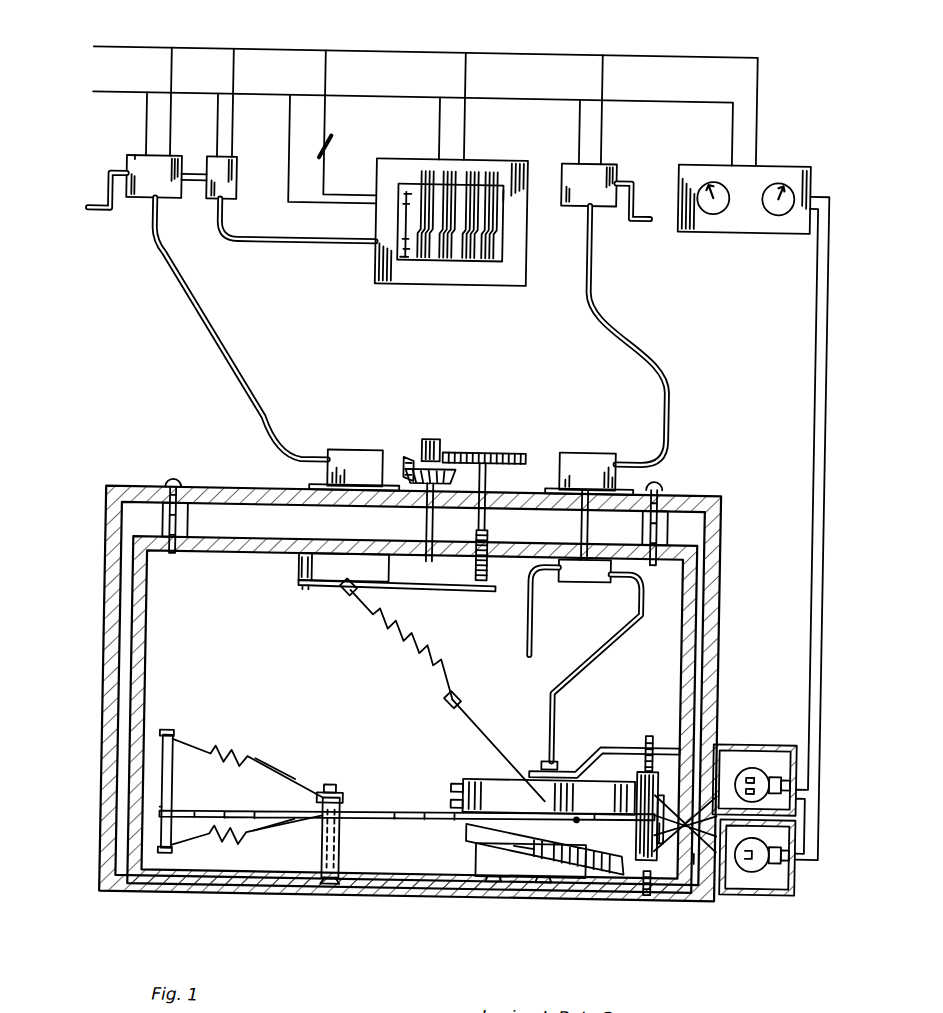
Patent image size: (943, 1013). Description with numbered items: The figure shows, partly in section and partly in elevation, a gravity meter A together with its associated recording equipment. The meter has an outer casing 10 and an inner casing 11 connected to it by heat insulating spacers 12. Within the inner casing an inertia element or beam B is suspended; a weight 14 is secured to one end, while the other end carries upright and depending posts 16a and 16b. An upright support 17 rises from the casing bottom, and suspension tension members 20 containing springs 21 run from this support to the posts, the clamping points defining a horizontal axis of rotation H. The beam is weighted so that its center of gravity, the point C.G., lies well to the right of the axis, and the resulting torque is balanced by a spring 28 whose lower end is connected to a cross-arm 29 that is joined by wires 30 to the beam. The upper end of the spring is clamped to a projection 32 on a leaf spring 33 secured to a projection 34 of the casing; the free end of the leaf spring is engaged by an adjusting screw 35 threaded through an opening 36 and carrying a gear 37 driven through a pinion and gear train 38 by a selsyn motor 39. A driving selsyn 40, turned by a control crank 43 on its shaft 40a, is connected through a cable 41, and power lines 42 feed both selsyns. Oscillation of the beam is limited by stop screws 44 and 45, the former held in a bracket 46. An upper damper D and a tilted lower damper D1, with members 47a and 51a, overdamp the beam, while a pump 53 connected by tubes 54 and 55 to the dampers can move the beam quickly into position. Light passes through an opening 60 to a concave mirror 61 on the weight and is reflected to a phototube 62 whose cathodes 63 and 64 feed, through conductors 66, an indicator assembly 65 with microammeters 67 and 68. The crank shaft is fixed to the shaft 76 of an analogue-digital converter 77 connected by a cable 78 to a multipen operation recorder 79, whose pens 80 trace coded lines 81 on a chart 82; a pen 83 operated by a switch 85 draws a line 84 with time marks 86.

The outer casing 10 is at (126, 492).
The inner casing 11 is at (262, 557).
The heat insulating spacers 12 is at (190, 525).
The weight 14 is at (647, 780).
The upright post 16a is at (178, 780).
The depending post 16b is at (165, 813).
The upright support 17 is at (346, 836).
The suspension tension members 20 is at (282, 782).
The springs 21 is at (240, 756).
The spring 28 is at (386, 640).
The cross-arm 29 is at (458, 696).
The wires 30 is at (502, 735).
The projection 32 is at (362, 592).
The leaf spring 33 is at (398, 560).
The projection 34 is at (306, 582).
The adjusting screw 35 is at (488, 520).
The opening 36 is at (477, 552).
The gear 37 is at (500, 453).
The pinion and gear train 38 is at (430, 440).
The selsyn motor 39 is at (355, 452).
The driving selsyn 40 is at (145, 205).
The selsyn shaft 40a is at (130, 161).
The cable 41 is at (222, 326).
The power lines 42 is at (118, 90).
The control crank 43 is at (105, 176).
The stop screw 44 is at (653, 733).
The stop screw 45 is at (652, 895).
The bracket 46 is at (603, 745).
The damper member 47a is at (530, 850).
The damper member 51a is at (484, 858).
The pump 53 is at (582, 580).
The tube 54 is at (648, 602).
The tube 55 is at (528, 605).
The opening 60 is at (698, 750).
The concave mirror 61 is at (665, 842).
The phototube 62 is at (776, 766).
The cathode 63 is at (759, 770).
The cathode 64 is at (812, 818).
The indicator assembly 65 is at (790, 161).
The conductors 66 is at (812, 330).
The microammeter 67 is at (708, 178).
The microammeter 68 is at (773, 212).
The shaft 76 is at (188, 179).
The analogue-digital converter 77 is at (240, 175).
The cable 78 is at (306, 246).
The multipen operation recorder 79 is at (455, 287).
The pens 80 is at (470, 185).
The lines 81 is at (420, 200).
The chart 82 is at (499, 186).
The pen 83 is at (398, 262).
The line 84 is at (398, 225).
The switch 85 is at (322, 150).
The time mark 86 is at (399, 252).
The gravity meter A is at (250, 485).
The beam B is at (425, 806).
The damper D is at (472, 783).
The damper D1 is at (468, 830).
The horizontal axis of rotation H is at (343, 795).
The center of gravity C.G. is at (583, 820).